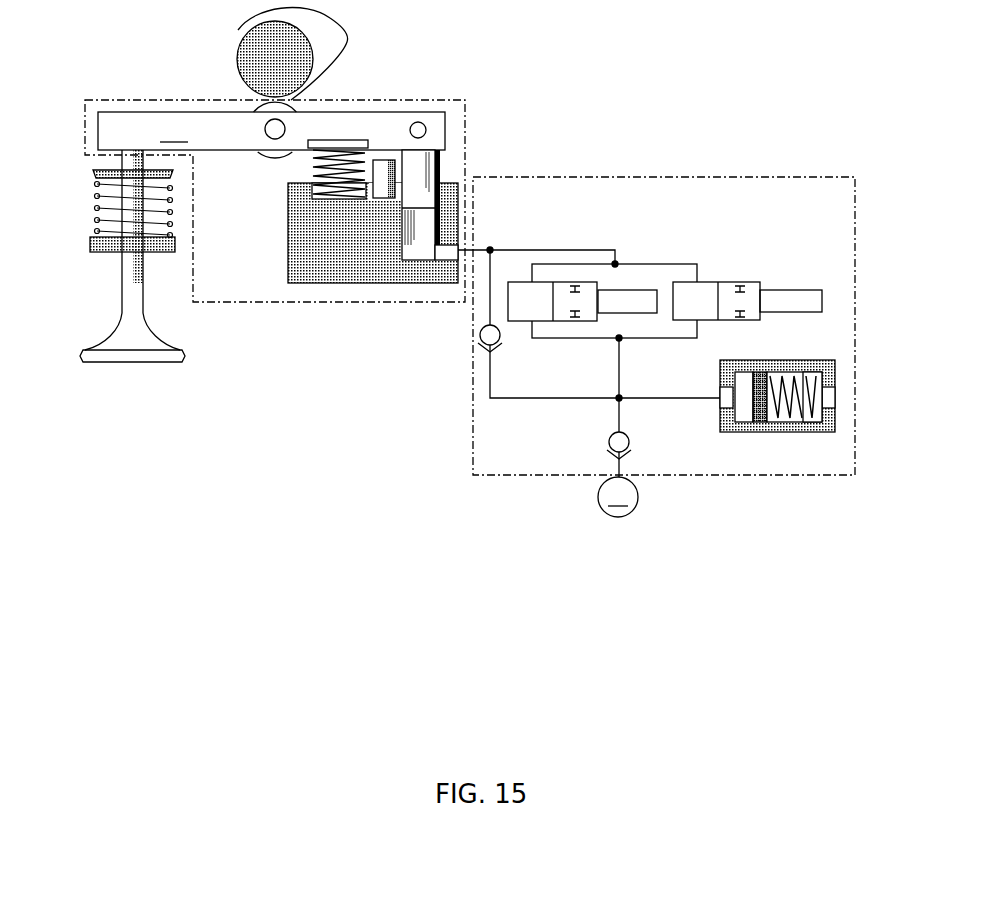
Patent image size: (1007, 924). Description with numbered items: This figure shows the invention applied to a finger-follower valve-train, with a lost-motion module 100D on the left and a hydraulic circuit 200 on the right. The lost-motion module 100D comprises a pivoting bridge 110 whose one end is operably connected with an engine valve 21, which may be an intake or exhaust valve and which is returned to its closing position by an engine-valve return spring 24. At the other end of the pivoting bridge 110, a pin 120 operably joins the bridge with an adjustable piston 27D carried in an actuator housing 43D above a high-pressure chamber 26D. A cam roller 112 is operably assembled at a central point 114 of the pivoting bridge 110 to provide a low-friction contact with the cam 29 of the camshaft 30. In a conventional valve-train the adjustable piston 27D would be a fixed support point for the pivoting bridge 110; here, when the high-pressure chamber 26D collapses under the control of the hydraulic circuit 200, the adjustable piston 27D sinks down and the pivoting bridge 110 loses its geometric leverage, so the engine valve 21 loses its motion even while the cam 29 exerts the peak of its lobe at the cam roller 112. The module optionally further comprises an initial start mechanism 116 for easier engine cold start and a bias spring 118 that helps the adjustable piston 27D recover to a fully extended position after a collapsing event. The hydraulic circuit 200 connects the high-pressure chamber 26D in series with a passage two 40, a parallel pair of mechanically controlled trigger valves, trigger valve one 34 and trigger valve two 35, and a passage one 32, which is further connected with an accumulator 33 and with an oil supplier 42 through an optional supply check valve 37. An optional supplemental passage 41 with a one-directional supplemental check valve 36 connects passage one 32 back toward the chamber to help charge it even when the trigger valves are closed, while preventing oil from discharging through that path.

The engine valve 21 is at (125, 348).
The engine-valve return spring 24 is at (105, 205).
The high-pressure chamber 26D is at (422, 245).
The adjustable piston 27D is at (424, 186).
The cam 29 is at (325, 47).
The camshaft 30 is at (262, 50).
The passage one 32 is at (622, 372).
The accumulator 33 is at (769, 362).
The trigger valve one 34 is at (556, 280).
The trigger valve two 35 is at (712, 282).
The supplemental check valve 36 is at (497, 345).
The supply check valve 37 is at (628, 455).
The passage two 40 is at (515, 250).
The supplemental passage 41 is at (506, 400).
The oil supplier 42 is at (618, 497).
The actuator housing 43D is at (300, 235).
The lost-motion module 100D is at (466, 136).
The pivoting bridge 110 is at (271, 131).
The cam roller 112 is at (273, 157).
The central point 114 is at (265, 125).
The initial start mechanism 116 is at (383, 180).
The bias spring 118 is at (312, 172).
The pin 120 is at (420, 124).
The hydraulic circuit 200 is at (725, 181).